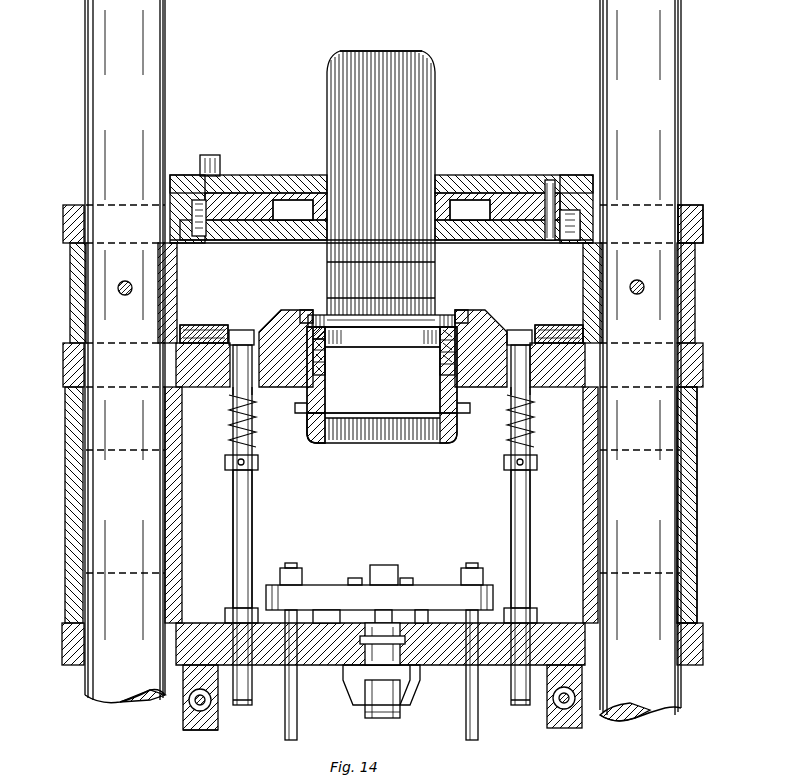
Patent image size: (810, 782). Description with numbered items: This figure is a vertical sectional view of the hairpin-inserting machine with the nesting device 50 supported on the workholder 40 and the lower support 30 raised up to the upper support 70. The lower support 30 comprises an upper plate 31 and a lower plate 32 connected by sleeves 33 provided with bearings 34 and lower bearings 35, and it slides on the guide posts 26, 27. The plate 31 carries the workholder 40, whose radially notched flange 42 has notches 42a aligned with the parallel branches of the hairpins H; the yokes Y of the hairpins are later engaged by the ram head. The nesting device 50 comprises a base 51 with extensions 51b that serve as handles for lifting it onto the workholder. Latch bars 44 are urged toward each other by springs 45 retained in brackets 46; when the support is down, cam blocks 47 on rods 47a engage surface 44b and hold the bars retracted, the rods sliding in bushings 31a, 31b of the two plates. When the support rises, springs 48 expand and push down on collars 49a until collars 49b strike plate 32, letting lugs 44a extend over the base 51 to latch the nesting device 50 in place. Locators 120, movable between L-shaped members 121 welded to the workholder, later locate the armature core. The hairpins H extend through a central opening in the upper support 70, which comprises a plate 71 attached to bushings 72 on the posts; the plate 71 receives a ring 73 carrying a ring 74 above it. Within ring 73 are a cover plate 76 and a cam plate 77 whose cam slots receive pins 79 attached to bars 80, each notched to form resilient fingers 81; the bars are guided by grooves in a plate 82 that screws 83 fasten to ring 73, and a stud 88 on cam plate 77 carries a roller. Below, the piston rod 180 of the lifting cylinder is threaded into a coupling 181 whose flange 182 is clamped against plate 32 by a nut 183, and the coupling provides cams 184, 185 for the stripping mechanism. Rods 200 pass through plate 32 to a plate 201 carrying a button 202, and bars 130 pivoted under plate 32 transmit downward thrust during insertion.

The post 26 is at (84, 92).
The post 27 is at (683, 104).
The upper support 70 is at (727, 213).
The plate 71 is at (704, 241).
The bushing 72 is at (177, 275).
The ring 73 is at (585, 175).
The ring 74 is at (549, 180).
The cover plate 76 is at (465, 175).
The cam plate 77 is at (503, 193).
The pin 79 is at (238, 200).
The bar 80 is at (262, 205).
The resilient finger 81 is at (293, 220).
The plate 82 is at (510, 220).
The screw 83 is at (568, 240).
The stud 88 is at (212, 155).
The hairpin H is at (436, 106).
The yoke Y is at (378, 51).
The nesting device 50 is at (440, 315).
The base 51 is at (400, 325).
The L-shaped member 121 is at (325, 334).
The locator 120 is at (322, 362).
The workholder 40 is at (457, 418).
The radially notched flange 42 is at (440, 443).
The notch 42a is at (335, 443).
The latch bar 44 is at (270, 322).
The lug 44a is at (308, 310).
The surface 44b is at (245, 330).
The spring 45 is at (180, 333).
The bracket 46 is at (210, 348).
The cam block 47 is at (242, 330).
The rod 47a is at (252, 548).
The spring 48 is at (256, 425).
The collar 49a is at (255, 470).
The collar 49b is at (227, 612).
The upper plate 31 is at (703, 363).
The bushing 31a is at (232, 392).
The bushing 31b is at (233, 703).
The lower support 30 is at (740, 472).
The plate 32 is at (704, 652).
The sleeve 33 is at (66, 493).
The bearing 34 is at (70, 411).
The bottom block 35 is at (70, 594).
The bar 130 is at (215, 730).
The extension 51b is at (182, 778).
The piston rod 180 is at (395, 716).
The coupling 181 is at (395, 645).
The flange 182 is at (362, 665).
The nut 183 is at (336, 615).
The cam 184 is at (345, 690).
The cam 185 is at (420, 690).
The rod 200 is at (298, 712).
The plate 201 is at (328, 585).
The button 202 is at (385, 565).